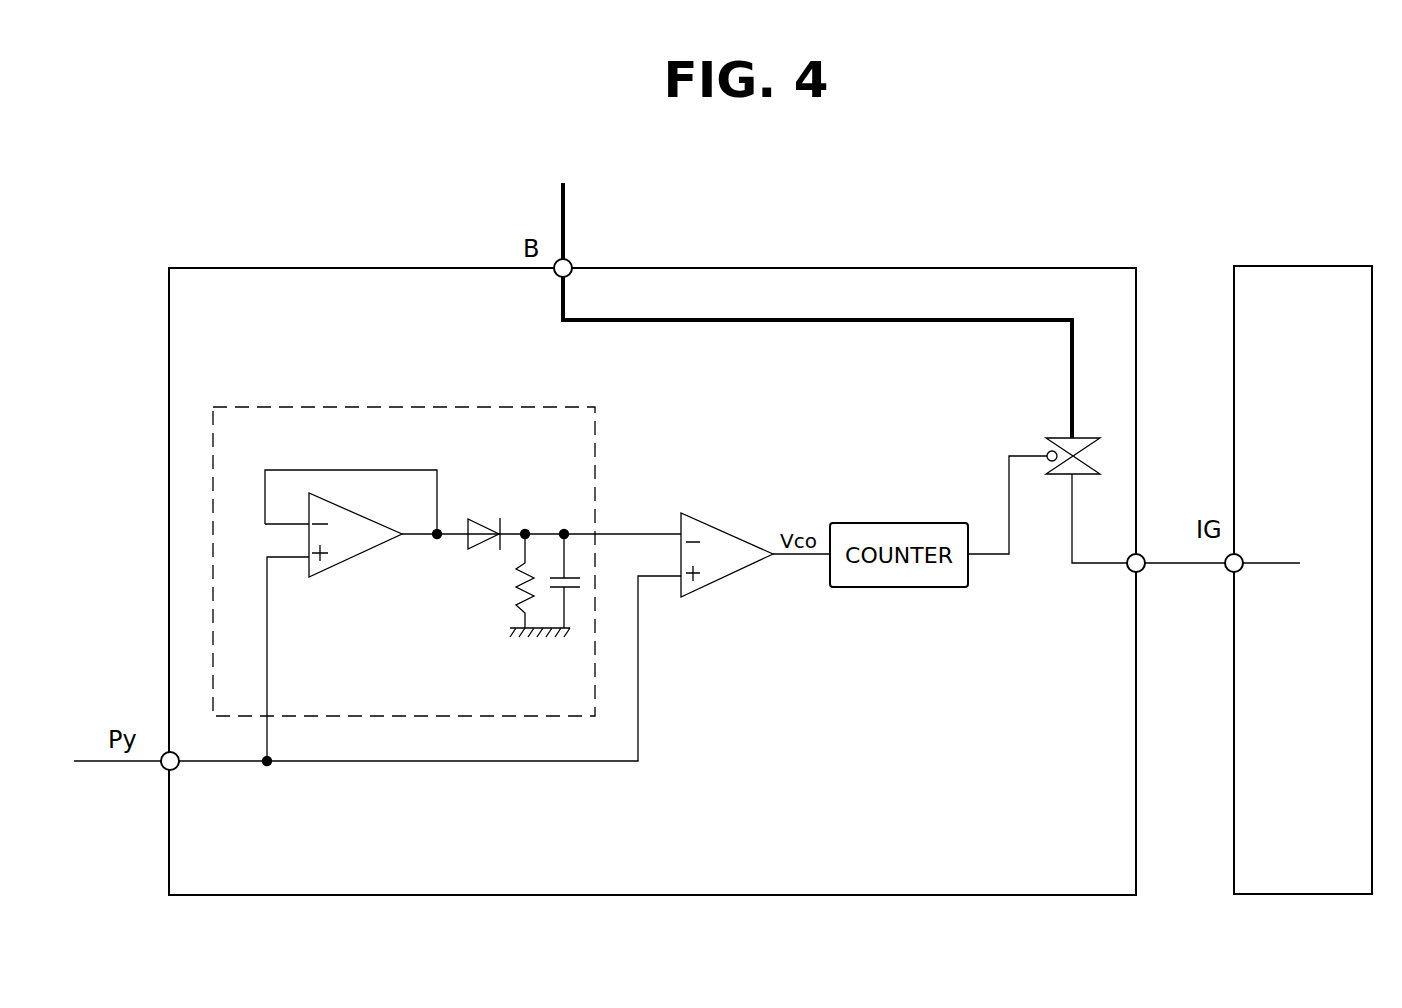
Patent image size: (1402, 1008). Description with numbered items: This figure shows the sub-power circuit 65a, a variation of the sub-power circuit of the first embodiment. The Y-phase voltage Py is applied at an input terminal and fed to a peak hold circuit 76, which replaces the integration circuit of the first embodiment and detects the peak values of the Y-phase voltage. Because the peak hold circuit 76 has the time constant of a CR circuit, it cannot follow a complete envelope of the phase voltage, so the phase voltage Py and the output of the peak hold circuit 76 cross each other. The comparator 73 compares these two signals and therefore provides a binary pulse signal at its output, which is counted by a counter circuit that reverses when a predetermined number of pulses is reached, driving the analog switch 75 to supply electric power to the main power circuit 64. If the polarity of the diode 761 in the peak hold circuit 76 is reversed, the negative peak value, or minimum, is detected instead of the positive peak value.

The main power circuit 64 is at (1291, 266).
The sub-power circuit 65a is at (858, 268).
The comparator 73 is at (722, 529).
The analog switch 75 is at (1052, 437).
The peak hold circuit 76 is at (447, 550).
The diode 761 is at (482, 519).